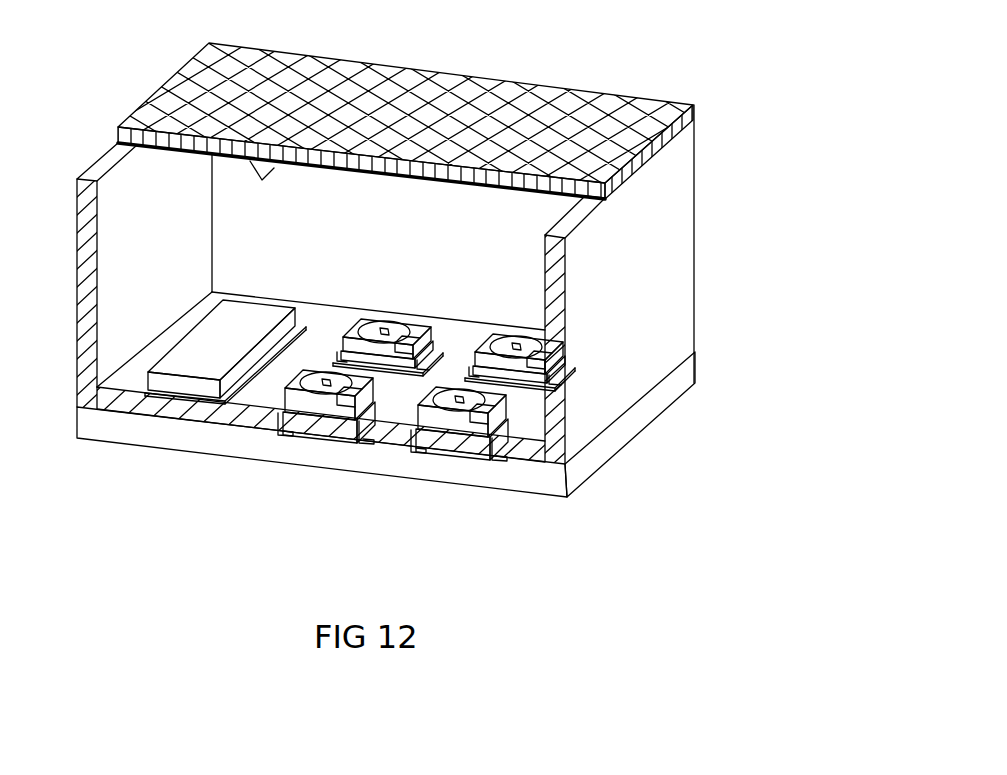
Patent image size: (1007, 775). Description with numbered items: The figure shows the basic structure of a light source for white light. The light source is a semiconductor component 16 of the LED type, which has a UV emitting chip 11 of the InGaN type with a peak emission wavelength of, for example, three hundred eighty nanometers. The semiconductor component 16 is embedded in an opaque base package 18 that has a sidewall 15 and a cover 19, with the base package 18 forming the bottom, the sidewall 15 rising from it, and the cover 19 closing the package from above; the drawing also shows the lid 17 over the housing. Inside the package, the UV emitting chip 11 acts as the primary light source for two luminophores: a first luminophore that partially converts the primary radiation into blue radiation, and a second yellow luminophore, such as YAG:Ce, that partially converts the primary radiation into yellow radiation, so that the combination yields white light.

The UV emitting chip 11 is at (326, 387).
The sidewall 15 is at (714, 250).
The semiconductor component 16 is at (322, 427).
The lid 17 is at (403, 68).
The base package 18 is at (632, 423).
The cover 19 is at (195, 92).